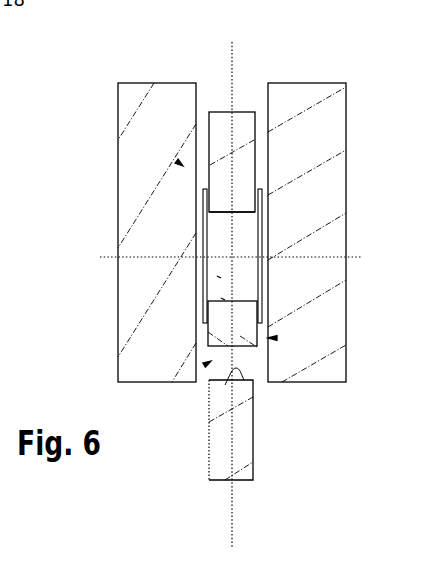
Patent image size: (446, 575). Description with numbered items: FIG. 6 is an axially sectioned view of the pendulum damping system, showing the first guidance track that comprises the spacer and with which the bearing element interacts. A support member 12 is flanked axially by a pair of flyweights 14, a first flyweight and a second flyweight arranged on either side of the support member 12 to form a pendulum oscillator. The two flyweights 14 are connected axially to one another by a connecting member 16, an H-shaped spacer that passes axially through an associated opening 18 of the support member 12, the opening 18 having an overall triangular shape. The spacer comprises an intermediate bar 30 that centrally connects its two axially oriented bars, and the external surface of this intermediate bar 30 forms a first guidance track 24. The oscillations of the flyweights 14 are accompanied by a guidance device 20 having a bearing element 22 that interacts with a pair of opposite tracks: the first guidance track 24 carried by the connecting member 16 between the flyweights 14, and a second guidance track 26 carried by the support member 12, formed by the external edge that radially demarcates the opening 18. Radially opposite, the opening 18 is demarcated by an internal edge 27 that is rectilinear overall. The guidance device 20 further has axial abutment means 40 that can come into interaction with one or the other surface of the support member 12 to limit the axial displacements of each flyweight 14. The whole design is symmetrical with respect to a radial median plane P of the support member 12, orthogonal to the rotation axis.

The radial median plane P is at (234, 57).
The support member 12 is at (225, 125).
The flyweight 14 is at (170, 107).
The connecting member 16 is at (278, 338).
The opening 18 is at (204, 365).
The guidance device 20 is at (176, 160).
The bearing element 22 is at (219, 277).
The first guidance track 24 is at (224, 299).
The second guidance track 26 is at (223, 213).
The internal edge 27 is at (225, 385).
The intermediate bar 30 is at (253, 340).
The axial abutment means 40 is at (203, 200).